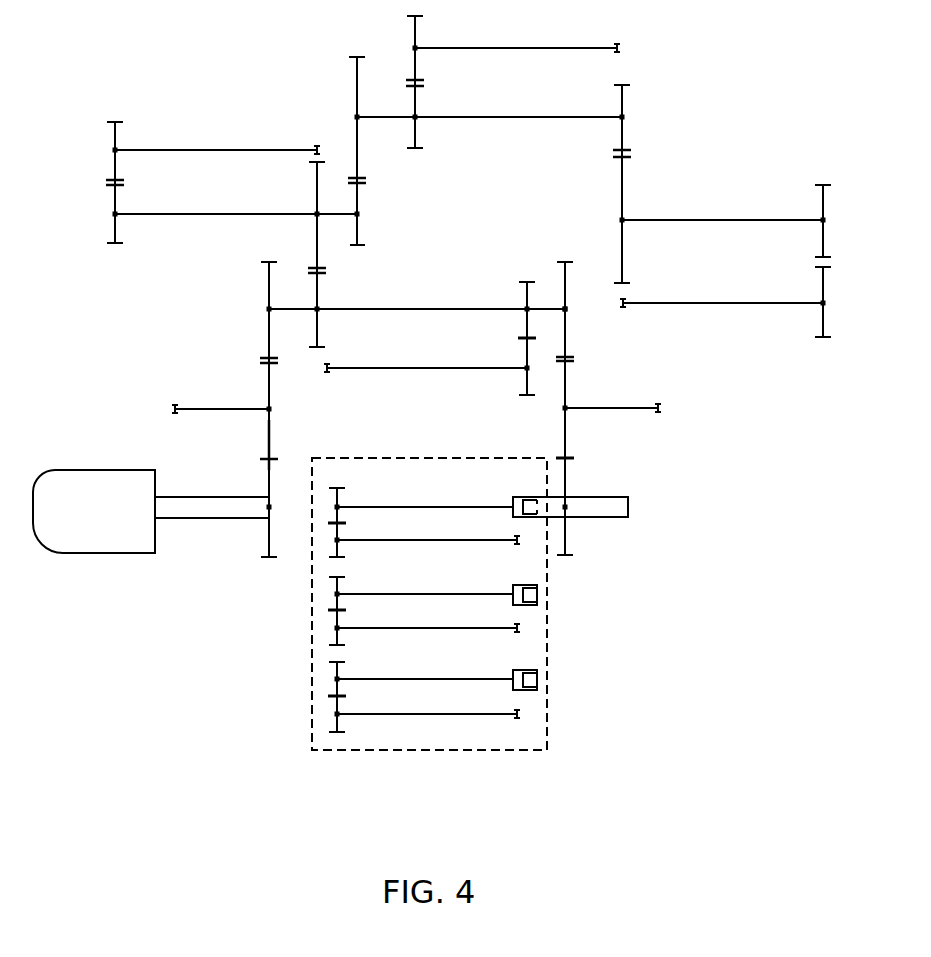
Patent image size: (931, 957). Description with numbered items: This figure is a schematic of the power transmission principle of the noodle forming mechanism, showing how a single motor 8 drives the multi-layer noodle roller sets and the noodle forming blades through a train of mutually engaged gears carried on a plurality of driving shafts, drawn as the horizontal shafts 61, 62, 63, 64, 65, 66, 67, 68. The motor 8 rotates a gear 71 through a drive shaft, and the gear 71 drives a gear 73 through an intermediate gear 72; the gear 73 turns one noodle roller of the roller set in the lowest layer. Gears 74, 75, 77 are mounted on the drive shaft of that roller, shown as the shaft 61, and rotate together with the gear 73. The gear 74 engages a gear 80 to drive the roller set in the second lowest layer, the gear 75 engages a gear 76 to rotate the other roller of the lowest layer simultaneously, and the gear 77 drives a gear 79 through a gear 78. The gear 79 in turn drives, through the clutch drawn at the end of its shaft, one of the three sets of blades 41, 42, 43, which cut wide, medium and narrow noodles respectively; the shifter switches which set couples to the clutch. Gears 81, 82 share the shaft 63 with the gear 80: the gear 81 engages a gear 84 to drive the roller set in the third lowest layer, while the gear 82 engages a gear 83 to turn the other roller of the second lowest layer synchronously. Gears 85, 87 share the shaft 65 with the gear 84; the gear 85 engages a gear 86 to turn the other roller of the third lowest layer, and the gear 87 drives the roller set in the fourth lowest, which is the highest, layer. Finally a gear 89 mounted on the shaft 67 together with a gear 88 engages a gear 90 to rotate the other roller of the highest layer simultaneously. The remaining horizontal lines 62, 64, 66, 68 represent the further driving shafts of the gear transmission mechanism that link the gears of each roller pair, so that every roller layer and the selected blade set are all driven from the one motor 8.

The motor 8 is at (151, 511).
The blades 41 is at (478, 522).
The blades 42 is at (432, 611).
The blades 43 is at (432, 697).
The first shaft 61 is at (418, 298).
The second shaft 62 is at (425, 357).
The third shaft 63 is at (236, 203).
The fourth shaft 64 is at (217, 141).
The fifth shaft 65 is at (489, 105).
The sixth shaft 66 is at (517, 39).
The seventh shaft 67 is at (722, 207).
The eighth shaft 68 is at (721, 293).
The gear 71 is at (282, 513).
The gear 72 is at (238, 437).
The gear 73 is at (282, 341).
The gear 74 is at (331, 303).
The gear 75 is at (512, 302).
The gear 76 is at (512, 360).
The gear 77 is at (579, 326).
The gear 78 is at (597, 404).
The gear 79 is at (579, 492).
The gear 80 is at (330, 212).
The gear 81 is at (371, 225).
The gear 82 is at (129, 206).
The gear 83 is at (130, 144).
The gear 84 is at (370, 128).
The gear 85 is at (430, 128).
The gear 86 is at (431, 58).
The gear 87 is at (637, 127).
The gear 88 is at (636, 226).
The gear 89 is at (838, 221).
The gear 90 is at (838, 302).